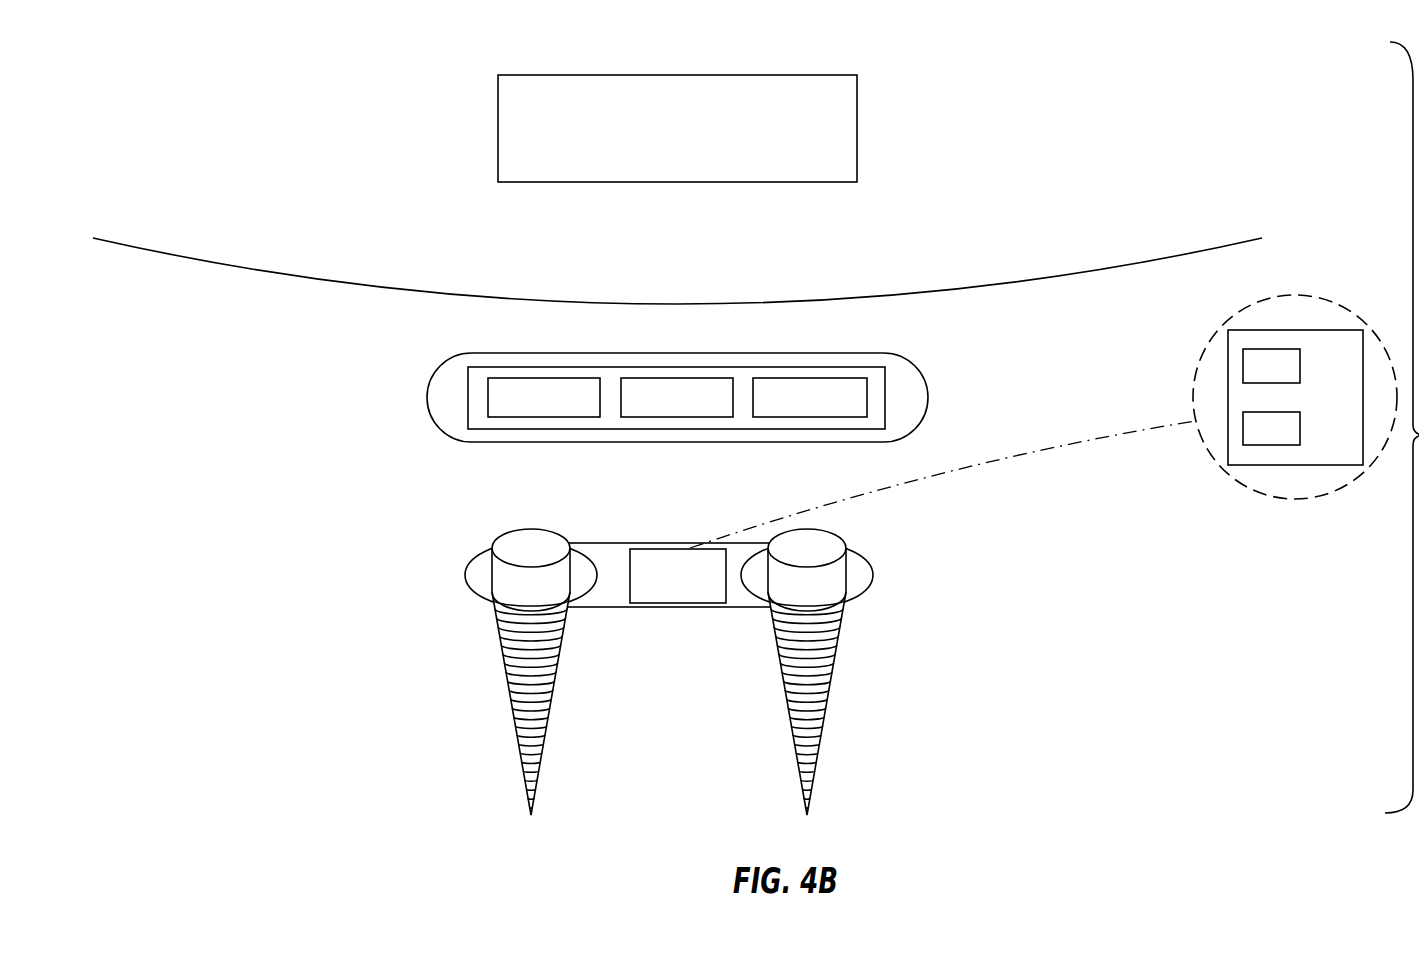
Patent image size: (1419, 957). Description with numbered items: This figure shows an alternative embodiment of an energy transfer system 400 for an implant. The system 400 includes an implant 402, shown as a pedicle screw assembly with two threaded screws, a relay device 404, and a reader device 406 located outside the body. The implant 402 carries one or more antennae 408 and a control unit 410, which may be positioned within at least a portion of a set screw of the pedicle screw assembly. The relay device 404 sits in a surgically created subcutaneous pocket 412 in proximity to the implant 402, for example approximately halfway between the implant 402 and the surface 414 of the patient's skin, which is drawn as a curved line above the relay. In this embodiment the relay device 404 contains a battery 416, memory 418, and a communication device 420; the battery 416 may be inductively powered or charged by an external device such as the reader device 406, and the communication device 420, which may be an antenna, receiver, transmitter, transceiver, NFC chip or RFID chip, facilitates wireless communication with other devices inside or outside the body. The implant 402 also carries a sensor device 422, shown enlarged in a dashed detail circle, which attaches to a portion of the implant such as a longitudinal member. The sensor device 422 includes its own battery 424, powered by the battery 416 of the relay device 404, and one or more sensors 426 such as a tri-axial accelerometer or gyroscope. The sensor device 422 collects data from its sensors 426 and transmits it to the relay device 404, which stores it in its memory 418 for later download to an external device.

The system 400 is at (290, 106).
The implant 402 is at (908, 536).
The relay device 404 is at (887, 387).
The reader device 406 is at (857, 127).
The antennae 408 is at (688, 652).
The control unit 410 is at (532, 577).
The subcutaneous pocket 412 is at (433, 373).
The surface of a patient's skin 414 is at (155, 253).
The battery 416 is at (535, 417).
The memory 418 is at (665, 417).
The communication device 420 is at (793, 417).
The sensor device 422 is at (691, 603).
The battery 424 is at (1243, 367).
The sensors 426 is at (1253, 445).